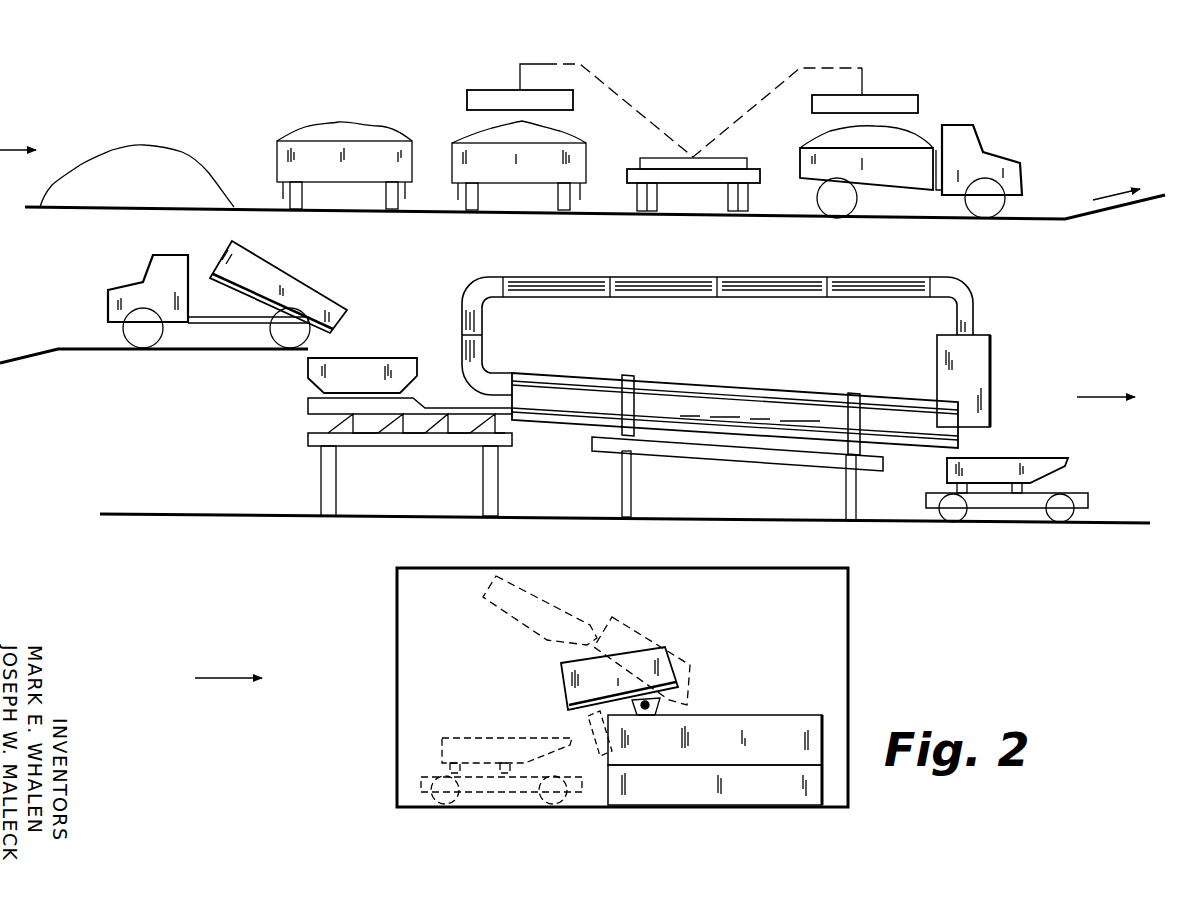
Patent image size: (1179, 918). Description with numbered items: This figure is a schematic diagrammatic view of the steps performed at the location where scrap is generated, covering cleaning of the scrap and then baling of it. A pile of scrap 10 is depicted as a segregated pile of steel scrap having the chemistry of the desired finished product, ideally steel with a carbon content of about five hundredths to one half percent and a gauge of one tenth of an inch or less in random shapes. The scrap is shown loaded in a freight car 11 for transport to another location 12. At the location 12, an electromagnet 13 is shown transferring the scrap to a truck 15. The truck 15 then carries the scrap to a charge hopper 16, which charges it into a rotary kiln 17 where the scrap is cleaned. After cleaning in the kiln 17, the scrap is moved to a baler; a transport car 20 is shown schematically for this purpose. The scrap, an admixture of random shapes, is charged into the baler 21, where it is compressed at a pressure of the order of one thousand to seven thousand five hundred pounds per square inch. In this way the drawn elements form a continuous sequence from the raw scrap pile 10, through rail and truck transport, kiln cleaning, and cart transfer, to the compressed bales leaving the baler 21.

The pile of scrap 10 is at (128, 213).
The freight car 11 is at (392, 210).
The location 12 is at (519, 218).
The electromagnet 13 is at (905, 97).
The truck 15 is at (998, 152).
The charge hopper 16 is at (360, 358).
The rotary kiln 17 is at (750, 498).
The transport car 20 is at (1025, 458).
The baler 21 is at (647, 811).